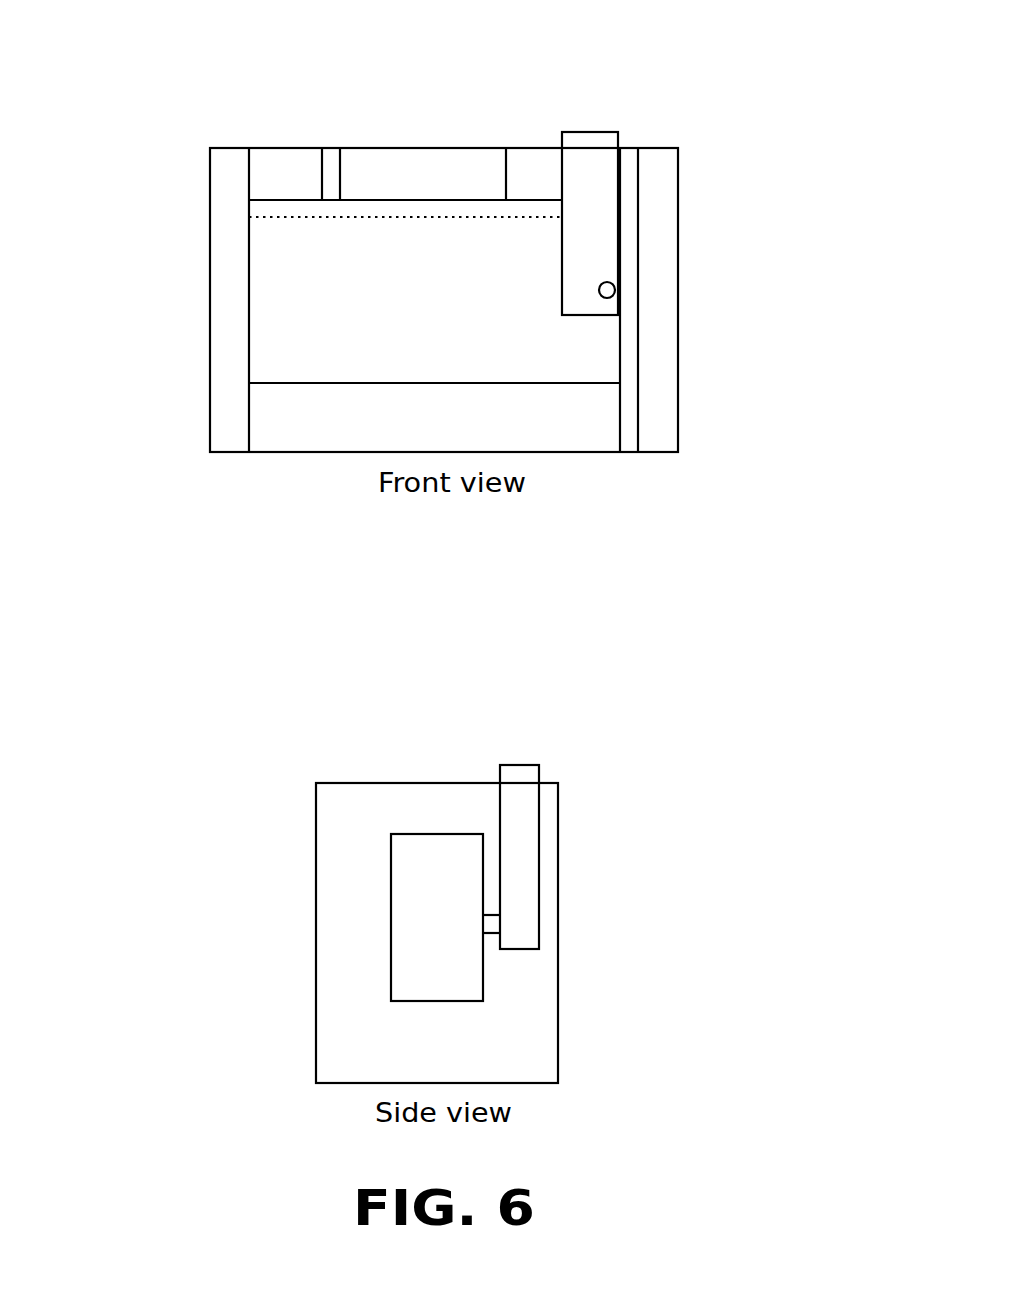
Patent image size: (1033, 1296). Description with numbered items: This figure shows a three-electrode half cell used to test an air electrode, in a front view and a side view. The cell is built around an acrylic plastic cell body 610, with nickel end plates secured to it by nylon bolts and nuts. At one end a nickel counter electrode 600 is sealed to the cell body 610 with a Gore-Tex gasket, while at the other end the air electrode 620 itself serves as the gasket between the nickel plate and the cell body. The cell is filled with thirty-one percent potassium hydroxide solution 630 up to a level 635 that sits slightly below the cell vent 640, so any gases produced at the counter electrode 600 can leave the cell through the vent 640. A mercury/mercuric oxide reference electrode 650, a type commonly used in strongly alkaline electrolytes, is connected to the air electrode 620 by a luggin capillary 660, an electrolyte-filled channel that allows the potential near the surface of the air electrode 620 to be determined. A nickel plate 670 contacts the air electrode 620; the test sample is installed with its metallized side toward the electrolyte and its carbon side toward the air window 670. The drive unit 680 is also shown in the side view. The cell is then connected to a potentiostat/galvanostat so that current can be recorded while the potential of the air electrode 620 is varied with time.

The nickel counter electrode 600 is at (206, 211).
The acrylic plastic cell body 610 is at (441, 386).
The air electrode 620 is at (625, 159).
The potassium hydroxide solution 630 is at (324, 300).
The level 635 is at (285, 206).
The vent 640 is at (342, 144).
The reference electrode 650 is at (596, 482).
The luggin capillary 660 is at (601, 131).
The nickel plate 670 is at (565, 832).
The drive unit 680 is at (482, 967).